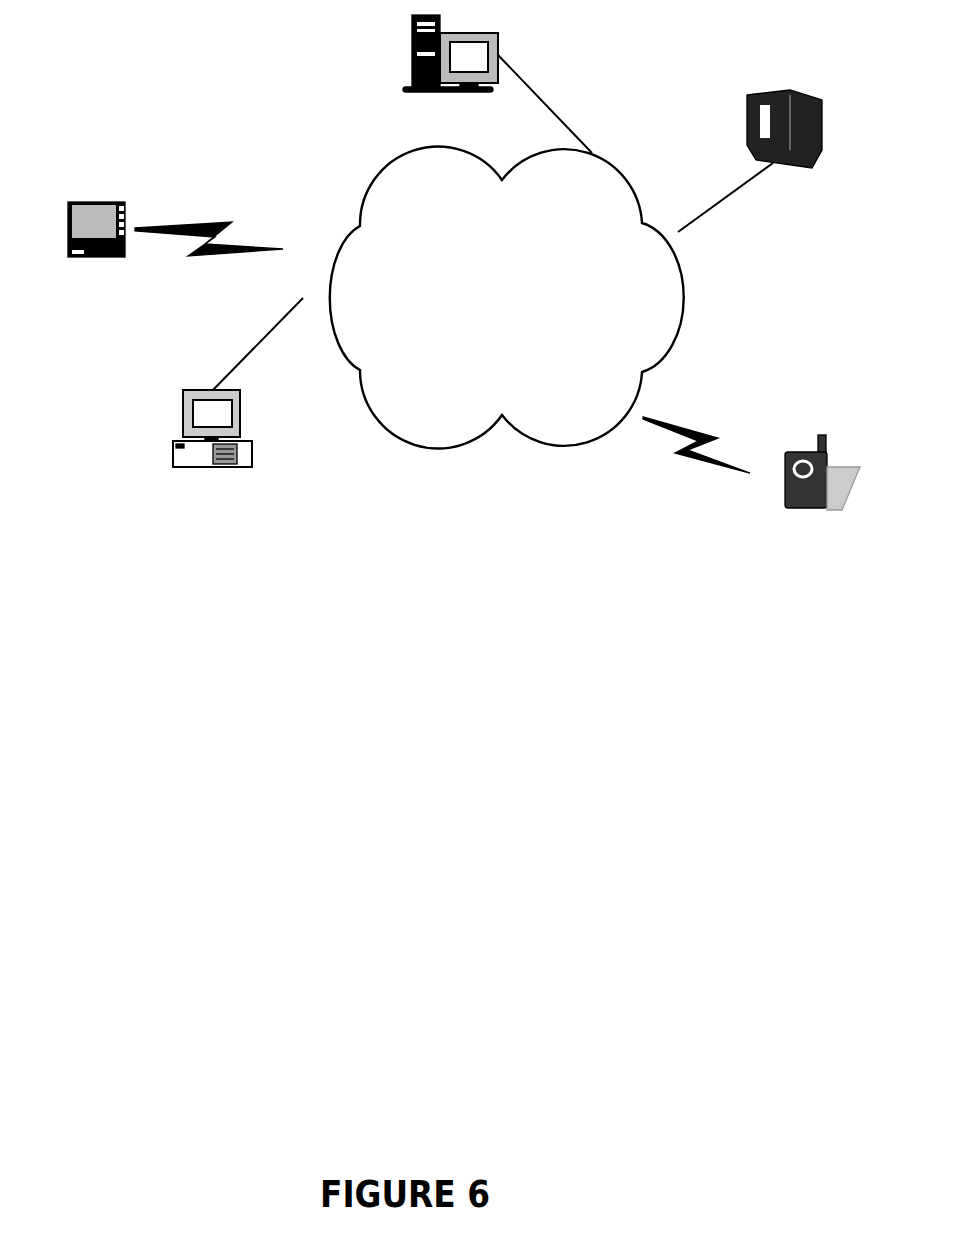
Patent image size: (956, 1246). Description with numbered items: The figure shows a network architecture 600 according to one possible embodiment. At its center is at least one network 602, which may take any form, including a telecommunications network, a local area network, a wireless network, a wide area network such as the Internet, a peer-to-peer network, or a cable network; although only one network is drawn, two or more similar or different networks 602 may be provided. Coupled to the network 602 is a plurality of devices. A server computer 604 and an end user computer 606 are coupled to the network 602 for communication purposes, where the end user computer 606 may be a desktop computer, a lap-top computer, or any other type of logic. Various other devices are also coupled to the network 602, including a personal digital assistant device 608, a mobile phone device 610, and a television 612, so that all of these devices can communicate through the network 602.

The network architecture 600 is at (406, 750).
The network 602 is at (560, 450).
The server computer 604 is at (413, 53).
The end user computer 606 is at (173, 445).
The personal digital assistant (PDA) device 608 is at (95, 202).
The mobile phone device 610 is at (783, 453).
The television 612 is at (763, 87).